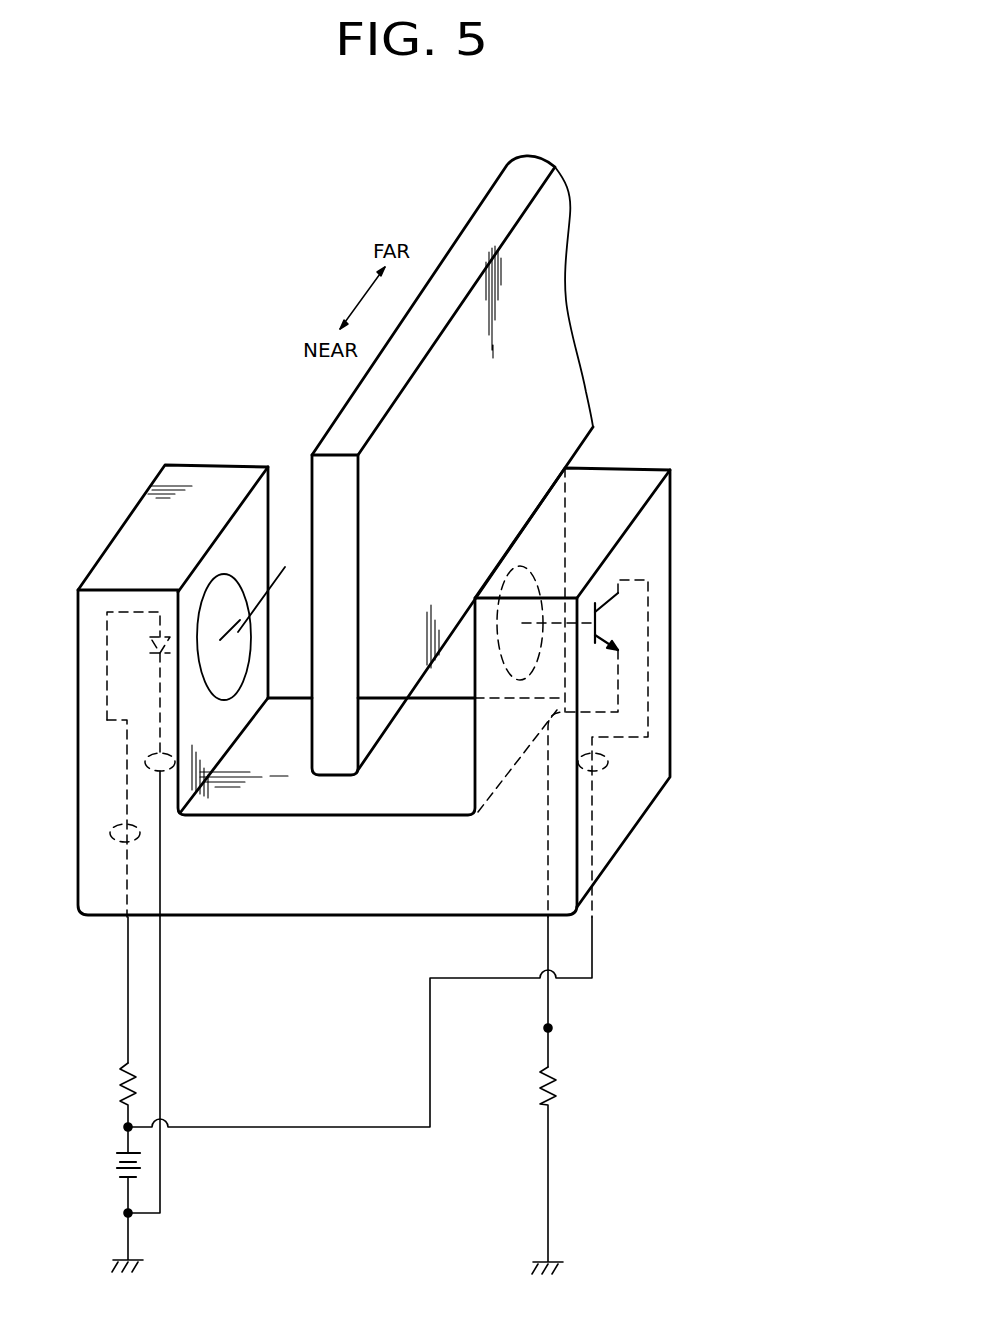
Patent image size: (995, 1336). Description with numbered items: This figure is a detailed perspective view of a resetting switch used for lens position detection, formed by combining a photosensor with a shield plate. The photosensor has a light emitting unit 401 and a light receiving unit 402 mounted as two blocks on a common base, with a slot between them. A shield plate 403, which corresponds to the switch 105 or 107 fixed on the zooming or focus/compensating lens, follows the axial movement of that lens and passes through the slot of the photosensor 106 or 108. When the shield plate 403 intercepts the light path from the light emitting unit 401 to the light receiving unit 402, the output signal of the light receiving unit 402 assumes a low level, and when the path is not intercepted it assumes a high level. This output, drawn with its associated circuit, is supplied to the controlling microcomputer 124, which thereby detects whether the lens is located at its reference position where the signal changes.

The light emitting unit 401 is at (207, 481).
The light receiving unit 402 is at (657, 563).
The shield plate 403 is at (380, 717).
The switch 107 is at (527, 465).
The switch 105 is at (548, 290).
The photosensor 108 is at (374, 871).
The photosensor 106 is at (283, 793).
The controlling microcomputer 124 is at (552, 1028).